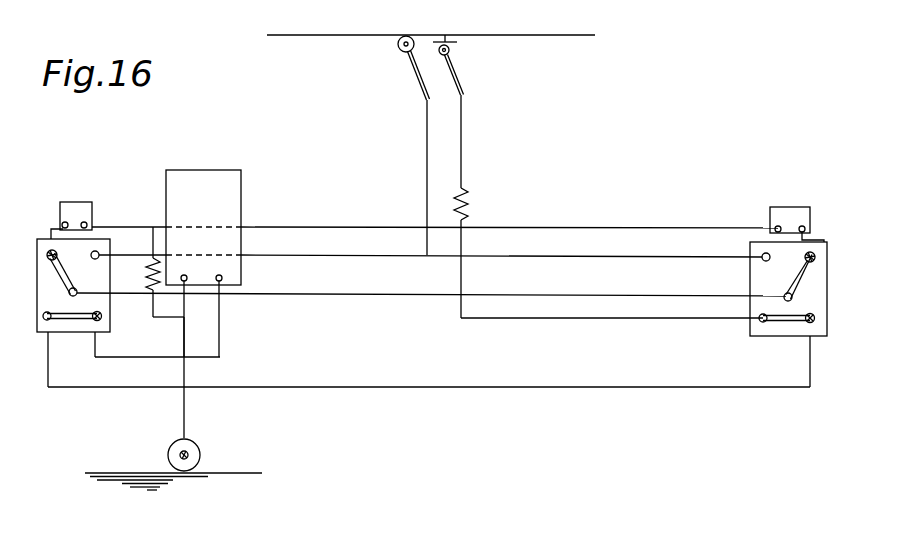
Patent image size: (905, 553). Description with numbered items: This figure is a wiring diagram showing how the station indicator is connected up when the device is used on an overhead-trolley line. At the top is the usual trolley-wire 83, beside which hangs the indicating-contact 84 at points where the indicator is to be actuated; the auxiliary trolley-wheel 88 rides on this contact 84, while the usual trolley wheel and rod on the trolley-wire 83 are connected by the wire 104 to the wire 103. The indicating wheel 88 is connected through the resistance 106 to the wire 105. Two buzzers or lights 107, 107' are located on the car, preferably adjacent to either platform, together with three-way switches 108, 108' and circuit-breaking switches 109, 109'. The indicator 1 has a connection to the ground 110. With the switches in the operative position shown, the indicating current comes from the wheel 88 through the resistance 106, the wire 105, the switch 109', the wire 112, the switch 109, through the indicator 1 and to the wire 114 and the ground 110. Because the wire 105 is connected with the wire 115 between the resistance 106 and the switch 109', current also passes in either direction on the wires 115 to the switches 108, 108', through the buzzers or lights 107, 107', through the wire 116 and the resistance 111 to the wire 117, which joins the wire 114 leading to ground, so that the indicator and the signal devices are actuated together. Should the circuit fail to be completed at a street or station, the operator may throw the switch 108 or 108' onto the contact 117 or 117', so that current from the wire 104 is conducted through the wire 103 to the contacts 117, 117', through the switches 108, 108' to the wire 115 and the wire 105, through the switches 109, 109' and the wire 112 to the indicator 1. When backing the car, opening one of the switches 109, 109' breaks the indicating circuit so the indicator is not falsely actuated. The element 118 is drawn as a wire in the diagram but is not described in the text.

The indicator 1 is at (241, 190).
The trolley-wire 83 is at (340, 36).
The indicating-contact 84 is at (455, 40).
The auxiliary trolley-wheel 88 is at (450, 50).
The wire 103 is at (396, 258).
The wire 104 is at (427, 150).
The wire 105 is at (562, 320).
The resistance 106 is at (469, 197).
The buzzer 107 is at (81, 206).
The buzzer 107' is at (802, 210).
The three-way switch 108 is at (76, 285).
The three-way switch 108' is at (766, 289).
The circuit-breaking switch 109 is at (72, 337).
The circuit-breaking switch 109' is at (787, 342).
The ground 110 is at (173, 471).
The resistance 111 is at (138, 272).
The wire 112 is at (619, 388).
The wire 114 is at (186, 332).
The wire 115 is at (345, 296).
The wire 116 is at (560, 226).
The contact 117 is at (137, 265).
The contact 117' is at (758, 228).
The conductor 118 is at (220, 355).